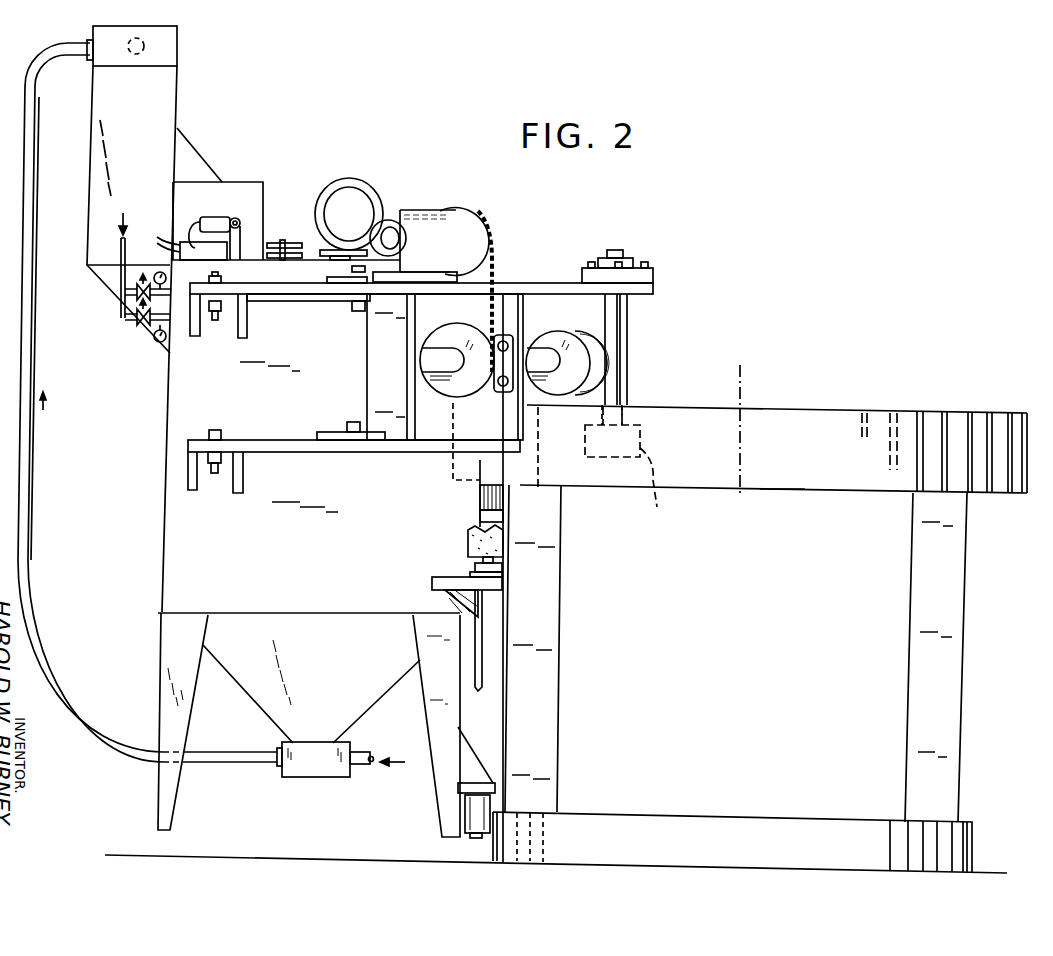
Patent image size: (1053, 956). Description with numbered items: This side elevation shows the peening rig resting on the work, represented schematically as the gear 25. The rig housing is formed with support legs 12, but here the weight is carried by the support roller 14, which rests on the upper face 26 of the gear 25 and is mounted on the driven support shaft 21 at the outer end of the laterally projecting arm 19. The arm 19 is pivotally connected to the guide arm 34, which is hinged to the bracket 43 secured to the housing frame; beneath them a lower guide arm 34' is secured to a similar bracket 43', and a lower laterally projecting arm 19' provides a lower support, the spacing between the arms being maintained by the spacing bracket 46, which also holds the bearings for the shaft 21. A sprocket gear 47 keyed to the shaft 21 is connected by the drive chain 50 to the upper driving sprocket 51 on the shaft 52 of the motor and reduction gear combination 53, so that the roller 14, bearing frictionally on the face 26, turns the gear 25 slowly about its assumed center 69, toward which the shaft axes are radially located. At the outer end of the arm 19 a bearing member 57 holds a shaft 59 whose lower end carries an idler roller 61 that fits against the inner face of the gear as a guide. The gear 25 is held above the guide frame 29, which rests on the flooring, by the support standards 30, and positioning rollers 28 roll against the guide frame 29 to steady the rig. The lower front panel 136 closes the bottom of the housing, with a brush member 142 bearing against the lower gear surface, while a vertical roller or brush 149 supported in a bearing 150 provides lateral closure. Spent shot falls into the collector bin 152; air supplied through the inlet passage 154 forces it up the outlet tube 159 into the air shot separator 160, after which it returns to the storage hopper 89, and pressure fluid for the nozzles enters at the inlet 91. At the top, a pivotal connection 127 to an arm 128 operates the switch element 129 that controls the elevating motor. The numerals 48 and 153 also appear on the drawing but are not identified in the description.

The air shot separator 160 is at (173, 59).
The storage hopper 89 is at (96, 229).
The inlet 91 is at (118, 247).
The bracket 43 is at (186, 331).
The arm 128 is at (228, 220).
The switch element 129 is at (217, 214).
The pivotal connection 127 is at (244, 221).
The motor and reduction gear combination 53 is at (416, 212).
The upper driving sprocket 51 is at (466, 207).
The drive chain 50 is at (505, 283).
The shaft 52 is at (492, 238).
The laterally projecting arm 19 is at (421, 271).
The guide arm 34 is at (308, 311).
The bearing member 57 is at (632, 278).
The frame 48 is at (367, 338).
The sprocket gear 47 is at (452, 324).
The support shaft 21 is at (440, 373).
The spacing bracket 46 is at (528, 303).
The support roller 14 is at (600, 356).
The shaft 59 is at (621, 313).
The upper face 26 is at (655, 405).
The assumed center 69 is at (742, 397).
The idler roller 61 is at (612, 463).
The gear 25 is at (782, 486).
The lower guide arm 34' is at (354, 452).
The bracket 43' is at (183, 481).
The lower laterally projecting arm 19' is at (440, 441).
The brush member 142 is at (480, 488).
The vertical roller or brush 149 is at (503, 548).
The bearing 150 is at (502, 577).
The panel 136 is at (486, 655).
The support standards 30 is at (553, 691).
The guide frame 29 is at (630, 820).
The support legs 12 is at (170, 790).
The collector bin 152 is at (270, 709).
The discharge box 153 is at (316, 772).
The inlet passage 154 is at (364, 754).
The outlet tube 159 is at (121, 746).
The positioning rollers 28 is at (463, 836).